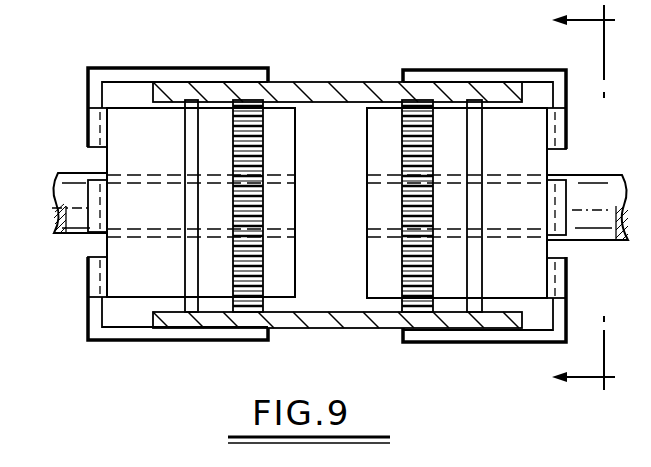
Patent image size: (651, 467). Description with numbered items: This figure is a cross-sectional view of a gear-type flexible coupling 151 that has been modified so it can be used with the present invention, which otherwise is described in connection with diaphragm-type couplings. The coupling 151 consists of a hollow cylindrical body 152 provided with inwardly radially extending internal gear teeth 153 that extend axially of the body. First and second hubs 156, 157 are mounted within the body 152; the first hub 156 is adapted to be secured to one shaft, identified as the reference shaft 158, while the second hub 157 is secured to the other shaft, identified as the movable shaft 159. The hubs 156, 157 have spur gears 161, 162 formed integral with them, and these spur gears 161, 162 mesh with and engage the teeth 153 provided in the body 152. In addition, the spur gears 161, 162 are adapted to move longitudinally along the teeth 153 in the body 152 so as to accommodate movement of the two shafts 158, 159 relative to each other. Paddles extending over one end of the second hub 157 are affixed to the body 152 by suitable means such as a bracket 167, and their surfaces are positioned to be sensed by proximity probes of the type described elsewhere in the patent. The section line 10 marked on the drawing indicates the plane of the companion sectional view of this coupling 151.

The section line 10- 10 is at (596, 197).
The gear-type flexible coupling 151 is at (354, 52).
The hollow cylindrical body 152 is at (302, 330).
The internal gear teeth 153 is at (207, 319).
The first hub 156 is at (126, 116).
The second hub 157 is at (532, 118).
The reference shaft 158 is at (80, 218).
The movable shaft 159 is at (593, 193).
The spur gear 161 is at (258, 108).
The spur gear 162 is at (414, 130).
The bracket 167 is at (217, 76).